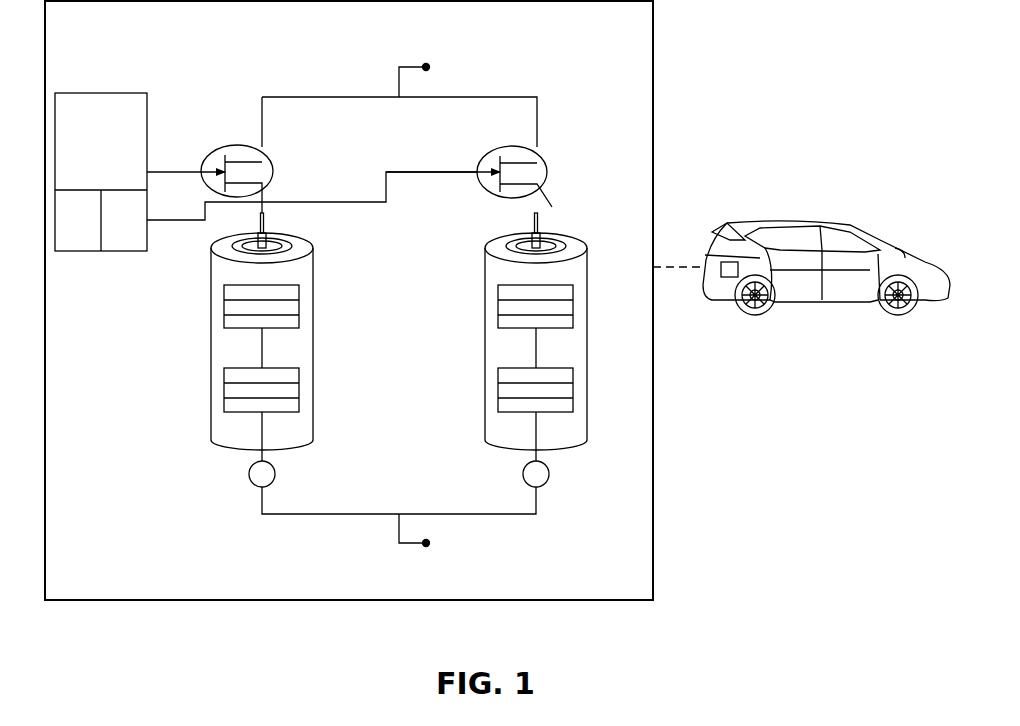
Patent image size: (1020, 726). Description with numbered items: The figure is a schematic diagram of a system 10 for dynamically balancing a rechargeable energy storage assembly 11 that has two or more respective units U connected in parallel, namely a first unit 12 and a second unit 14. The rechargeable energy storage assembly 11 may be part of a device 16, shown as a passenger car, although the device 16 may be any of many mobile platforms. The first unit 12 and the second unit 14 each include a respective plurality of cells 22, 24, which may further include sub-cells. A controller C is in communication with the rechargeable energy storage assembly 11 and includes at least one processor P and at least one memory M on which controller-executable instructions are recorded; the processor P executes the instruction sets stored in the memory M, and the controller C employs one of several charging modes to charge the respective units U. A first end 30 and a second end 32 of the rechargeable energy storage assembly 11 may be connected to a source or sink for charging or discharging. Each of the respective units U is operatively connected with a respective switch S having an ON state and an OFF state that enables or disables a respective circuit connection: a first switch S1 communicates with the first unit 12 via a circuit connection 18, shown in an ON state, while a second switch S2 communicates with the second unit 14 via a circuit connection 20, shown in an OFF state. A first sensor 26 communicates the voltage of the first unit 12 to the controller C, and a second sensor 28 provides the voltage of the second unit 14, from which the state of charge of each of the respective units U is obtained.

The system 10 is at (147, 38).
The rechargeable energy storage assembly 11 is at (314, 76).
The first unit 12 is at (267, 346).
The second unit 14 is at (567, 326).
The device 16 is at (825, 222).
The circuit connection 18 is at (240, 222).
The circuit connection 20 is at (553, 196).
The cells 22 is at (300, 307).
The cells 24 is at (574, 307).
The first sensor 26 is at (275, 474).
The second sensor 28 is at (549, 474).
The first end 30 is at (430, 60).
The second end 32 is at (432, 550).
The respective switch S is at (548, 112).
The first switch S1 is at (213, 140).
The second switch S2 is at (548, 150).
The respective units U is at (258, 346).
The controller C is at (101, 172).
The processor P is at (75, 222).
The memory M is at (122, 222).